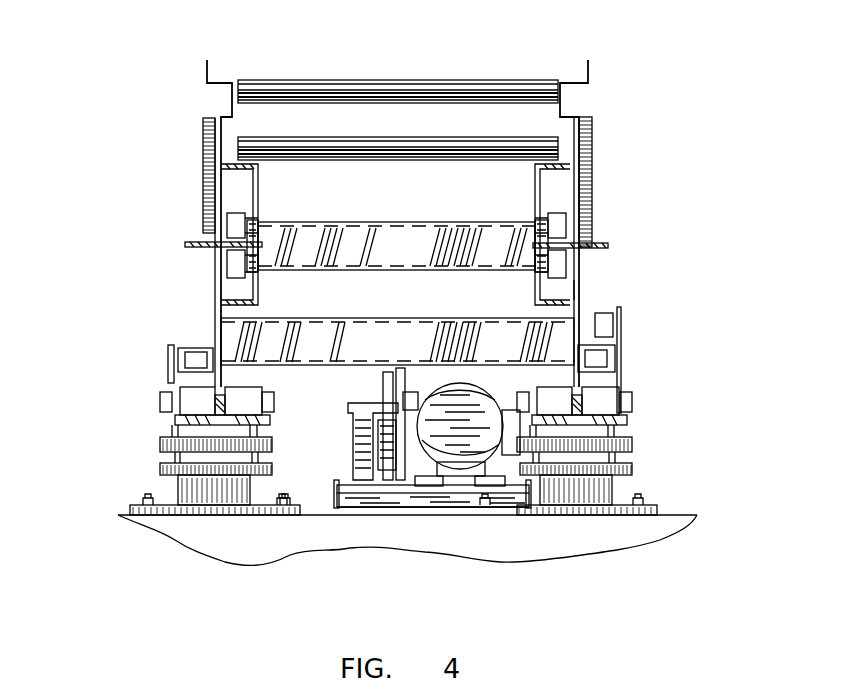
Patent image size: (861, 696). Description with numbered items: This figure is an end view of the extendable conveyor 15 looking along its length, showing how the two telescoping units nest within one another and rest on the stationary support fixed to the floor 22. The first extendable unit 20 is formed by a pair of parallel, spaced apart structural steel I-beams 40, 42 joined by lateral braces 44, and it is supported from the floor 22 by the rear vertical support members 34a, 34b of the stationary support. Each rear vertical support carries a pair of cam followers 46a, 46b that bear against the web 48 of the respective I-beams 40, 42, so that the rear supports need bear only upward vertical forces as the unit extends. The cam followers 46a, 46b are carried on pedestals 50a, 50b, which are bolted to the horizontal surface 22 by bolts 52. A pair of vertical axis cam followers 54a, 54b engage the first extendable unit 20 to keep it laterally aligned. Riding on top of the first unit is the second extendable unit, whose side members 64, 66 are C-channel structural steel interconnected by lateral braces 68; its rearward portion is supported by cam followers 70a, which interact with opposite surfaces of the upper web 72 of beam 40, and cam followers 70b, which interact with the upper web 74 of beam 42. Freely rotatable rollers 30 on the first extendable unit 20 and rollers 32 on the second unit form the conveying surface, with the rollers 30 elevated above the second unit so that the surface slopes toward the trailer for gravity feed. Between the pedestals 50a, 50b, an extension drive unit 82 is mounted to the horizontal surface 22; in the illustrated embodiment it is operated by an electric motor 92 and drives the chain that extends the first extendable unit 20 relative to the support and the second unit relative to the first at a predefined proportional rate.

The extendable conveyor 15 is at (596, 118).
The first extendable unit 20 is at (578, 288).
The horizontal surface (floor) 22 is at (403, 508).
The rollers 30 is at (425, 80).
The rollers 32 is at (468, 137).
The rear vertical support member 34a is at (160, 446).
The rear vertical support member 34b is at (633, 445).
The I-beam 40 is at (233, 270).
The I-beam 42 is at (566, 272).
The lateral braces 44 is at (433, 327).
The cam followers 46a is at (235, 405).
The cam followers 46b is at (550, 407).
The web 48 is at (218, 413).
The pedestal 50a is at (160, 468).
The pedestal 50b is at (632, 470).
The bolts 52 is at (288, 502).
The vertical axis cam follower 54a is at (200, 353).
The vertical axis cam follower 54b is at (605, 350).
The side member 64 is at (250, 180).
The side member 66 is at (578, 187).
The lateral braces 68 is at (372, 222).
The cam followers 70a is at (240, 230).
The cam followers 70b is at (565, 248).
The upper web 72 is at (186, 244).
The upper web 74 is at (606, 246).
The extension drive unit 82 is at (420, 473).
The electric motor 92 is at (436, 400).